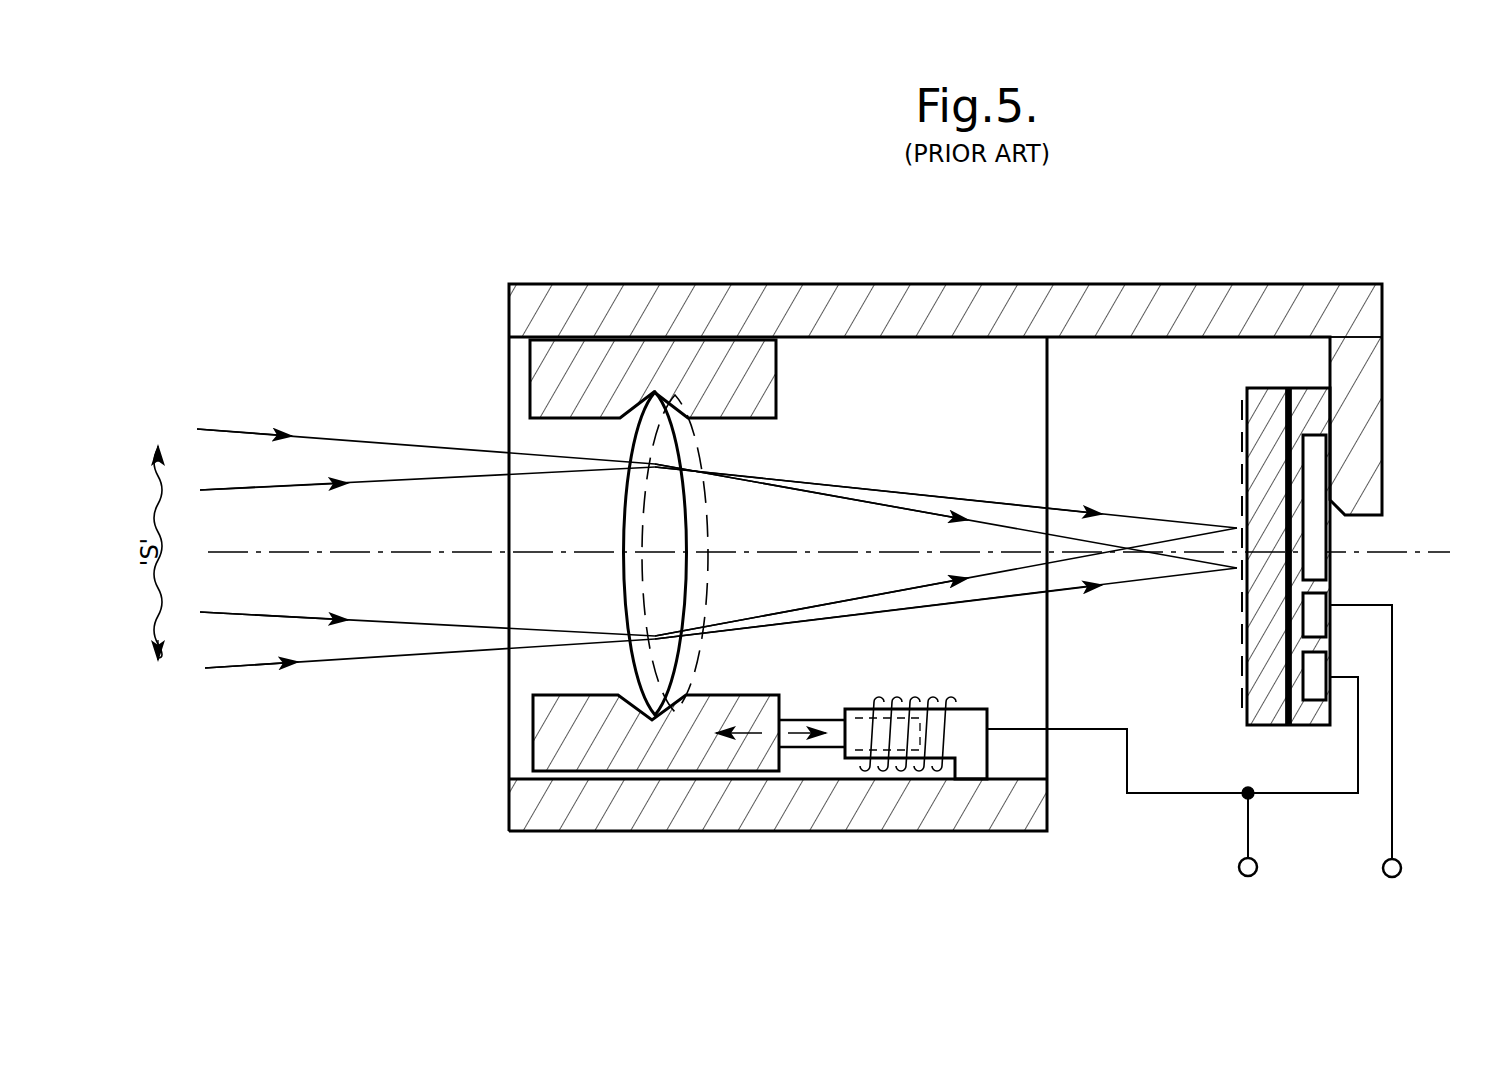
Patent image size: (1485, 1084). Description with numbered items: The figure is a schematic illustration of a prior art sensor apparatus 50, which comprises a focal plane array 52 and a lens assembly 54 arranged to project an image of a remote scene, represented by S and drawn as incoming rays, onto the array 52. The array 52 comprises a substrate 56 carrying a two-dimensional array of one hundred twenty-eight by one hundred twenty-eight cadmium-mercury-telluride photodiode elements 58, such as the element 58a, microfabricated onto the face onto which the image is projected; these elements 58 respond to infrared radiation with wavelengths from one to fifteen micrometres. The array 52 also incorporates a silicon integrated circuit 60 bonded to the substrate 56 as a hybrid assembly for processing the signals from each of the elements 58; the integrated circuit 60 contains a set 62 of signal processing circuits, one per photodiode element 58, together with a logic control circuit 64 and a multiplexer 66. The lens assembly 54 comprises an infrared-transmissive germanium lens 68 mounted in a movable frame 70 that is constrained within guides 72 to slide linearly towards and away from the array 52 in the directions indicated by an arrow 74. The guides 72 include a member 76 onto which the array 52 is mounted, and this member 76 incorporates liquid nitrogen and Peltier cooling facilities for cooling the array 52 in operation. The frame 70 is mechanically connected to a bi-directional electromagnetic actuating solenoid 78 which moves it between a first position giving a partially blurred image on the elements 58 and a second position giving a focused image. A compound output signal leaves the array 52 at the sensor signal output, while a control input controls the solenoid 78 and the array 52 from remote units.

The sensor apparatus 50 is at (370, 380).
The focal plane array 52 is at (1266, 383).
The lens assembly 54 is at (903, 282).
The substrate 56 is at (1333, 438).
The photodiode elements 58 is at (1226, 626).
The photodiode element 58a is at (1237, 460).
The silicon integrated circuit 60 is at (1308, 413).
The set of signal processing circuits 62 is at (1315, 538).
The logic control circuit 64 is at (1315, 673).
The multiplexer 66 is at (1315, 606).
The germanium lens 68 is at (638, 525).
The movable frame 70 is at (617, 372).
The guides 72 is at (671, 310).
The arrow 74 is at (760, 735).
The member 76 is at (1365, 330).
The bi-directional electromagnetic actuating solenoid 78 is at (962, 738).